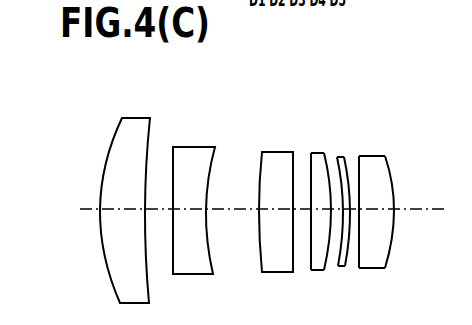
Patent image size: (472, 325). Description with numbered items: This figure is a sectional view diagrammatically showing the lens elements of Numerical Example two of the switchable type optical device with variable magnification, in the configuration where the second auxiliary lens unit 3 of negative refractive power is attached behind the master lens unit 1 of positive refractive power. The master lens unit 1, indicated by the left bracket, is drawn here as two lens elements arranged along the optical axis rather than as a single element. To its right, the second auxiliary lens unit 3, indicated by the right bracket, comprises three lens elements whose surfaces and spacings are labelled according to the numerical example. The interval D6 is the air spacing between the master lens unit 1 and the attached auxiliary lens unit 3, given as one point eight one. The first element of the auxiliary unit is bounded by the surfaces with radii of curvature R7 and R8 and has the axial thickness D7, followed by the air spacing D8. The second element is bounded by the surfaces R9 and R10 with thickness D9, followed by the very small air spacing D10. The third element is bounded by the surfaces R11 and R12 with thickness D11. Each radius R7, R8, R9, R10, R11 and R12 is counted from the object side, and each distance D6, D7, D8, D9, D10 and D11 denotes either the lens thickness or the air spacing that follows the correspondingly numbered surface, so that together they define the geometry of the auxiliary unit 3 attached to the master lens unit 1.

The master lens unit 1 is at (269, 88).
The second auxiliary lens unit 3 is at (440, 88).
The radius of curvature of seventh lens surface R7 is at (310, 156).
The radius of curvature of eighth lens surface R8 is at (328, 162).
The radius of curvature of ninth lens surface R9 is at (337, 160).
The radius of curvature of tenth lens surface R10 is at (348, 162).
The radius of curvature of eleventh lens surface R11 is at (368, 158).
The radius of curvature of twelfth lens surface R12 is at (392, 167).
The interval between master lens unit and auxiliary lens unit D6 is at (304, 245).
The thickness of seventh lens surface element D7 is at (320, 245).
The air spacing after eighth lens surface D8 is at (335, 245).
The thickness of ninth lens surface element D9 is at (343, 245).
The air spacing after tenth lens surface D10 is at (355, 245).
The thickness of eleventh lens surface element D11 is at (378, 250).